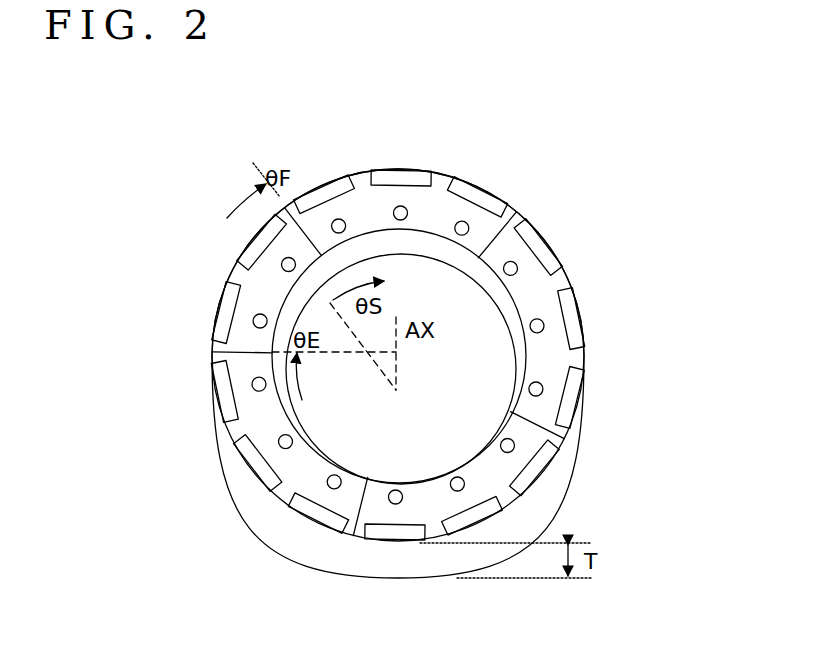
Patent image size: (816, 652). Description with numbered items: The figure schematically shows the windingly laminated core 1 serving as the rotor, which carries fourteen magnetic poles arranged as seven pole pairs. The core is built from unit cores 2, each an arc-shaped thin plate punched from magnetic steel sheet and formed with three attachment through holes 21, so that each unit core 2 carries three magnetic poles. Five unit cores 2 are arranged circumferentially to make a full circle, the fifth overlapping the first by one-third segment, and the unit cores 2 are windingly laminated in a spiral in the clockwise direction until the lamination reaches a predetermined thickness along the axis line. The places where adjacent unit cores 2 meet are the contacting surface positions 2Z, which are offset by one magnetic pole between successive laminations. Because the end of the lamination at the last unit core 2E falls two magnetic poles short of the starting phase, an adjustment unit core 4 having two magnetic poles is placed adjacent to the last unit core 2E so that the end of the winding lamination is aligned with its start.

The windingly laminated core 1 is at (163, 170).
The unit core 2 is at (362, 167).
The attachment through hole 21 is at (324, 176).
The contacting surface position 2Z is at (522, 204).
The last unit core 2E is at (252, 426).
The adjustment unit core 4 is at (245, 262).